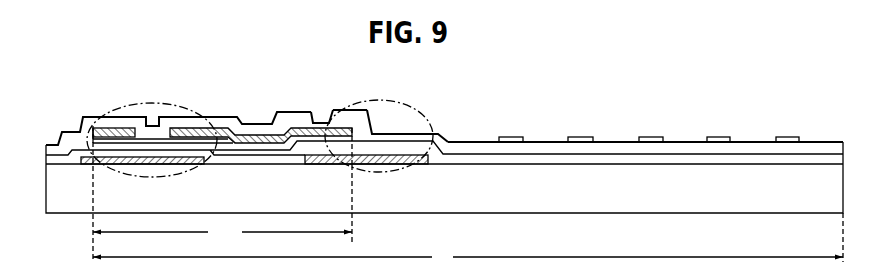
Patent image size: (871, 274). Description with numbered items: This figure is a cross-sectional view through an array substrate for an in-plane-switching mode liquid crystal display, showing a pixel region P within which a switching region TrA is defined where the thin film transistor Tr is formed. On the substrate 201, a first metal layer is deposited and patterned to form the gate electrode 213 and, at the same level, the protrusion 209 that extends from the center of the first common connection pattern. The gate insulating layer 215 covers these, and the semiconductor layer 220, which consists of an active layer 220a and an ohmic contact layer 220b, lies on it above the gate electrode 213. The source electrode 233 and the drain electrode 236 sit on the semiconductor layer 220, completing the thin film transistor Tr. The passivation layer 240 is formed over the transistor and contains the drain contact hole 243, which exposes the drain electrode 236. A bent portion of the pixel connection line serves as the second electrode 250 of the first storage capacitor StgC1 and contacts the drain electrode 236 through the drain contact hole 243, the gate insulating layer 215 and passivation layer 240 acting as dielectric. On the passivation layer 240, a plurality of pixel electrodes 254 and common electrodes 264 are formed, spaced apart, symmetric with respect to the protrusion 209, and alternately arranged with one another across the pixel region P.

The substrate 201 is at (817, 204).
The protrusion 209 is at (380, 167).
The gate electrode 213 is at (150, 166).
The gate insulating layer 215 is at (484, 159).
The semiconductor layer 220 is at (164, 170).
The active layer 220a is at (179, 146).
The ohmic contact layer 220b is at (192, 141).
The source electrode 233 is at (120, 128).
The drain electrode 236 is at (182, 128).
The passivation layer 240 is at (573, 149).
The drain contact hole 243 is at (323, 106).
The second electrode of the first storage capacitor 250 is at (400, 127).
The pixel electrodes 254 is at (585, 137).
The common electrodes 264 is at (517, 137).
The thin film transistor Tr is at (130, 176).
The first storage capacitor StgC1 is at (352, 169).
The switching region TrA is at (222, 194).
The pixel region P is at (468, 238).